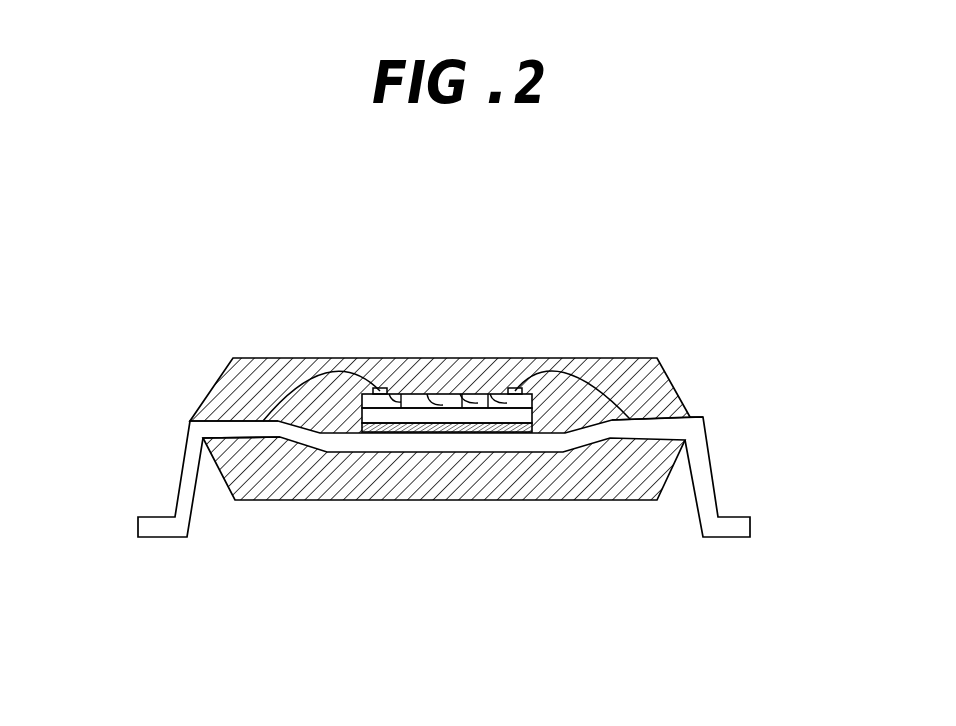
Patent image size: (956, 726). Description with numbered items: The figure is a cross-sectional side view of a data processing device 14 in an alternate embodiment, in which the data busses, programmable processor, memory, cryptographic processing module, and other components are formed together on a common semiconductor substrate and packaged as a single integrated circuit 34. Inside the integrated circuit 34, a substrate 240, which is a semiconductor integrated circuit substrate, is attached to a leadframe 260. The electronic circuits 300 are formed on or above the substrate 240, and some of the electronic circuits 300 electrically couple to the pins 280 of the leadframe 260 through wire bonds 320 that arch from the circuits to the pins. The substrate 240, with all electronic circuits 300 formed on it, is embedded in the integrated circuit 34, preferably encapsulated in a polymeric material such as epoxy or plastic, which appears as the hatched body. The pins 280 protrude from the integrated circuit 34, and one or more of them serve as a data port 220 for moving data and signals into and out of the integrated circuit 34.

The data processing device 14 is at (490, 709).
The integrated circuit 34 is at (638, 358).
The data port 220 is at (152, 527).
The substrate 240 is at (378, 418).
The leadframe 260 is at (693, 417).
The pins 280 is at (185, 480).
The electronic circuits 300 is at (490, 394).
The wire bonds 320 is at (330, 374).